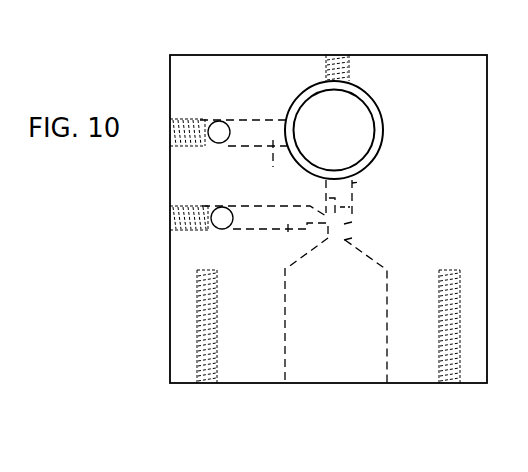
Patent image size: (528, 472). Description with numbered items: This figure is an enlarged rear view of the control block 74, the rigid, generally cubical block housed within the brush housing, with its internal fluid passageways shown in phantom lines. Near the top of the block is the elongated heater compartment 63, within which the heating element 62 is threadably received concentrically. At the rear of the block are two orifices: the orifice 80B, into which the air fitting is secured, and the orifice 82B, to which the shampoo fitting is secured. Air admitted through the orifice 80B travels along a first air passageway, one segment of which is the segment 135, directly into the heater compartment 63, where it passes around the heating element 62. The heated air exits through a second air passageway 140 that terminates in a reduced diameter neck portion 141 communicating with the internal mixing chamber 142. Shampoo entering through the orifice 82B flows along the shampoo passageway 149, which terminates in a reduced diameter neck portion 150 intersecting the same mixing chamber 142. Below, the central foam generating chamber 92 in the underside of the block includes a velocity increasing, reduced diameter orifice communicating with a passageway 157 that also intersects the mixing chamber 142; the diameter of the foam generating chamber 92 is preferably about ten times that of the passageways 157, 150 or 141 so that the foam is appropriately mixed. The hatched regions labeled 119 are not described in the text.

The control block 74 is at (491, 164).
The heating element 62 is at (342, 110).
The heater compartment 63 is at (312, 104).
The orifice 80B is at (217, 129).
The orifice 82B is at (222, 214).
The first air passageway segment 135 is at (275, 153).
The reduced diameter neck portion 150 is at (320, 198).
The second air passageway 140 is at (351, 184).
The reduced diameter neck portion 141 is at (350, 207).
The internal mixing chamber 142 is at (347, 224).
The passageway 157 is at (347, 240).
The shampoo passageway 149 is at (293, 237).
The foam generating chamber 92 is at (305, 320).
The slot 119 is at (232, 260).